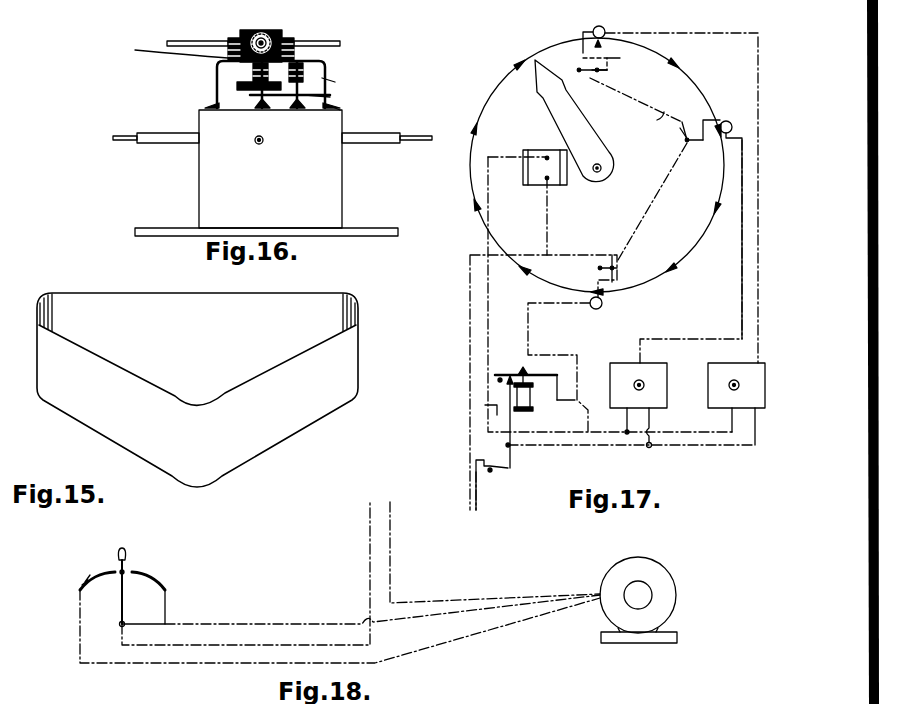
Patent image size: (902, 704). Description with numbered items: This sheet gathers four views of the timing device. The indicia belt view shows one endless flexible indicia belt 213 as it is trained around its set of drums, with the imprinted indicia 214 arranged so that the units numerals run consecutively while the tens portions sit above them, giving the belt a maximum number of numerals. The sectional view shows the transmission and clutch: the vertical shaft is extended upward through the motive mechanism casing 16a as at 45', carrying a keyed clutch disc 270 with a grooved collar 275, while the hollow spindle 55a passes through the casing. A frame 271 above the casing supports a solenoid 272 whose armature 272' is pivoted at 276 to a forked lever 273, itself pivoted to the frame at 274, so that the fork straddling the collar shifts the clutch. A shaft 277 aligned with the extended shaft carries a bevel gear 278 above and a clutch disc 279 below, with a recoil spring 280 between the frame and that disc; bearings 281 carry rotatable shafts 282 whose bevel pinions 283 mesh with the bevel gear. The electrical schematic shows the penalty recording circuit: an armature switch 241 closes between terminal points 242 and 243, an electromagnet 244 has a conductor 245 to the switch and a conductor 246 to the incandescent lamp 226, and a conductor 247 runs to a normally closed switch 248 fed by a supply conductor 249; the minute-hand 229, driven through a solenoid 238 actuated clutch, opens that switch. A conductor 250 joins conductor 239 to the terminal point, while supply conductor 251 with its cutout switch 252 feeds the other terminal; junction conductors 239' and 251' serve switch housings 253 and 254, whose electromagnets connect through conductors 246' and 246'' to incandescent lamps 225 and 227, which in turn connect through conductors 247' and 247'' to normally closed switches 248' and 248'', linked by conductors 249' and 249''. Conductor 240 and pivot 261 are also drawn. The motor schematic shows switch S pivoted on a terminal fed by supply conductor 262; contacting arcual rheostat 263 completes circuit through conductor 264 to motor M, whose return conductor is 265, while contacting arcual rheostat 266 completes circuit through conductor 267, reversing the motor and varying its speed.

In FIG. 16, the motive mechanism casing 16a is at (330, 198).
In FIG. 16, the hollow spindle 55a is at (390, 140).
In FIG. 16, the extended vertical shaft 45' is at (274, 128).
In FIG. 16, the solenoid 272 is at (303, 72).
In FIG. 16, the bevel gear 278 is at (227, 43).
In FIG. 16, the bevel pinion 283 is at (275, 30).
In FIG. 16, the bearing 281 is at (235, 38).
In FIG. 16, the rotatable shaft 282 is at (172, 42).
In FIG. 16, the recoil spring 280 is at (167, 53).
In FIG. 16, the shaft 277 is at (255, 73).
In FIG. 16, the armature 272' is at (337, 84).
In FIG. 16, the frame 271 is at (335, 82).
In FIG. 16, the clutch disc 279 is at (240, 86).
In FIG. 16, the clutch disc 270 is at (248, 95).
In FIG. 16, the pivot 274 is at (330, 96).
In FIG. 16, the forked lever 273 is at (342, 110).
In FIG. 16, the grooved collar 275 is at (255, 105).
In FIG. 16, the pivot 276 is at (297, 108).
In FIG. 15, the endless flexible indicia belt 213 is at (108, 308).
In FIG. 15, the indicia 214 is at (297, 442).
In FIG. 17, the minute-hand 229 is at (576, 128).
In FIG. 17, the incandescent lamp 227 is at (583, 36).
In FIG. 17, the conductor 247'' is at (646, 44).
In FIG. 17, the normally closed switch 248'' is at (623, 73).
In FIG. 17, the conductor 249'' is at (636, 108).
In FIG. 17, the incandescent lamp 225 is at (737, 112).
In FIG. 17, the conductor 247' is at (702, 144).
In FIG. 17, the normally closed switch 248' is at (678, 156).
In FIG. 17, the conductor 249' is at (652, 201).
In FIG. 17, the solenoid 238 is at (530, 178).
In FIG. 17, the conductor 240 is at (548, 253).
In FIG. 17, the conductor 239 is at (586, 294).
In FIG. 17, the conductor 249 is at (517, 382).
In FIG. 17, the normally closed switch 248 is at (582, 267).
In FIG. 17, the conductor 247 is at (631, 282).
In FIG. 17, the incandescent lamp 226 is at (598, 309).
In FIG. 17, the conductor 246' is at (724, 200).
In FIG. 17, the conductor 246'' is at (681, 174).
In FIG. 17, the armature switch 241 is at (515, 374).
In FIG. 17, the terminal point 242 is at (498, 380).
In FIG. 17, the terminal point 243 is at (508, 381).
In FIG. 17, the conductor 250 is at (486, 407).
In FIG. 17, the electromagnet 244 is at (525, 411).
In FIG. 17, the conductor 245 is at (554, 393).
In FIG. 17, the conductor 246 is at (582, 414).
In FIG. 17, the switch housing 253 is at (656, 374).
In FIG. 17, the switch housing 254 is at (722, 372).
In FIG. 17, the junction conductor 239' is at (630, 453).
In FIG. 17, the junction conductor 251' is at (736, 466).
In FIG. 17, the cutout switch 252 is at (494, 470).
In FIG. 17, the supply conductor 251 is at (496, 491).
In FIG. 18, the switch S is at (126, 556).
In FIG. 18, the arcual rheostat 266 is at (98, 578).
In FIG. 18, the arcual rheostat 263 is at (152, 578).
In FIG. 18, the pivot 261 is at (145, 613).
In FIG. 18, the conductor 264 is at (241, 618).
In FIG. 18, the supply conductor 262 is at (370, 555).
In FIG. 18, the return conductor 265 is at (392, 554).
In FIG. 18, the conductor 267 is at (148, 665).
In FIG. 18, the motor M is at (620, 576).